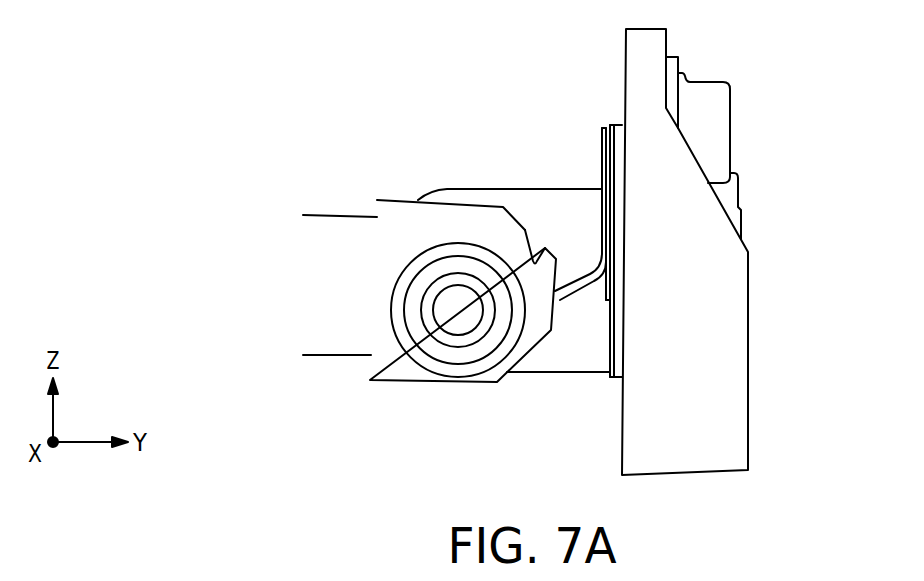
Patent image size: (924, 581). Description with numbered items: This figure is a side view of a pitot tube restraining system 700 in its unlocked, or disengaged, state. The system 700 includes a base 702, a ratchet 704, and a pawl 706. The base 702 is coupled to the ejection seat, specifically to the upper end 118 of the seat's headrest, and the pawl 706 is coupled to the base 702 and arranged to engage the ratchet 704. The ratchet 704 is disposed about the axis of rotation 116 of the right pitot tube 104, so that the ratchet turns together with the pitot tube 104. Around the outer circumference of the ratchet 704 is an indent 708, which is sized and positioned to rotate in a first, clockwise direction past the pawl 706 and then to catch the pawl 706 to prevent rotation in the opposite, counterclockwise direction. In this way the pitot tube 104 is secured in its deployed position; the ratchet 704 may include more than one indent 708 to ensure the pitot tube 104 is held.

The system 700 is at (203, 117).
The right pitot tube 104 is at (320, 216).
The axis of rotation 116 is at (458, 312).
The upper end 118 is at (655, 42).
The base 702 is at (611, 130).
The ratchet 704 is at (465, 217).
The pawl 706 is at (573, 285).
The indent 708 is at (537, 236).